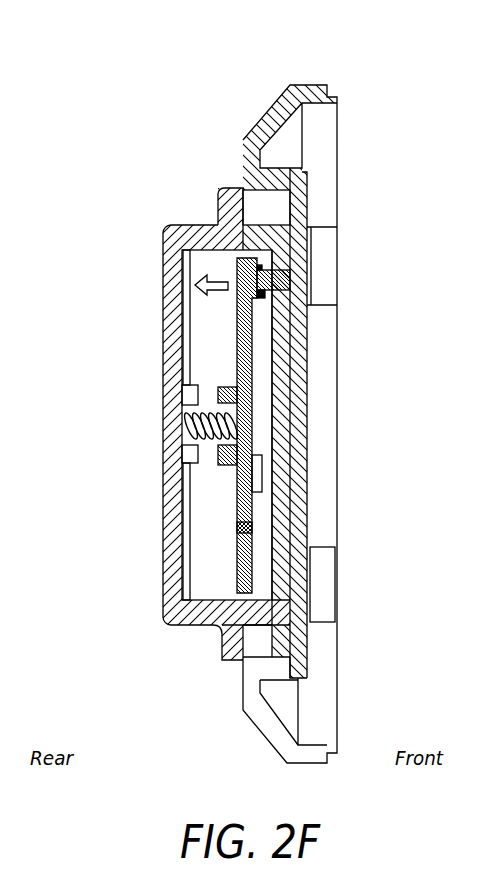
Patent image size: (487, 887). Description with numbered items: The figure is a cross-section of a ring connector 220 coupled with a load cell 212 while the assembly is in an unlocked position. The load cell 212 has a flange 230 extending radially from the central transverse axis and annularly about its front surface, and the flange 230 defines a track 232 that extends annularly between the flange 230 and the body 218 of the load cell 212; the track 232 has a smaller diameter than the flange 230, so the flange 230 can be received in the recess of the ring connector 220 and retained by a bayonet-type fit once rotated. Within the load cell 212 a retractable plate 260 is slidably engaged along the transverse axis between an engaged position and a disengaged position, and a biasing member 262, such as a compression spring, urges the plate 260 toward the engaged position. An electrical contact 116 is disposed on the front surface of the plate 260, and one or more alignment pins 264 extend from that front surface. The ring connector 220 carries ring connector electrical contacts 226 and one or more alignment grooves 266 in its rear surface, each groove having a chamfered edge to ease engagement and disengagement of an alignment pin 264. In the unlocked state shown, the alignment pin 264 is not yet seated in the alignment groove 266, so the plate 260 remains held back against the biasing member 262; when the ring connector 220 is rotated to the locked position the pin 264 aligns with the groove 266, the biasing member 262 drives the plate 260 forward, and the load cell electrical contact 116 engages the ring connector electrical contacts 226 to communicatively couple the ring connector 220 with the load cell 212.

The electrical contact 116 is at (245, 531).
The load cell 212 is at (150, 293).
The body 218 is at (233, 213).
The ring connector 220 is at (312, 85).
The ring connector electrical contacts 226 is at (277, 552).
The flange 230 is at (283, 640).
The track 232 is at (257, 638).
The retractable plate 260 is at (243, 333).
The biasing member 262 is at (188, 424).
The alignment pin 264 is at (280, 298).
The alignment groove 266 is at (293, 268).